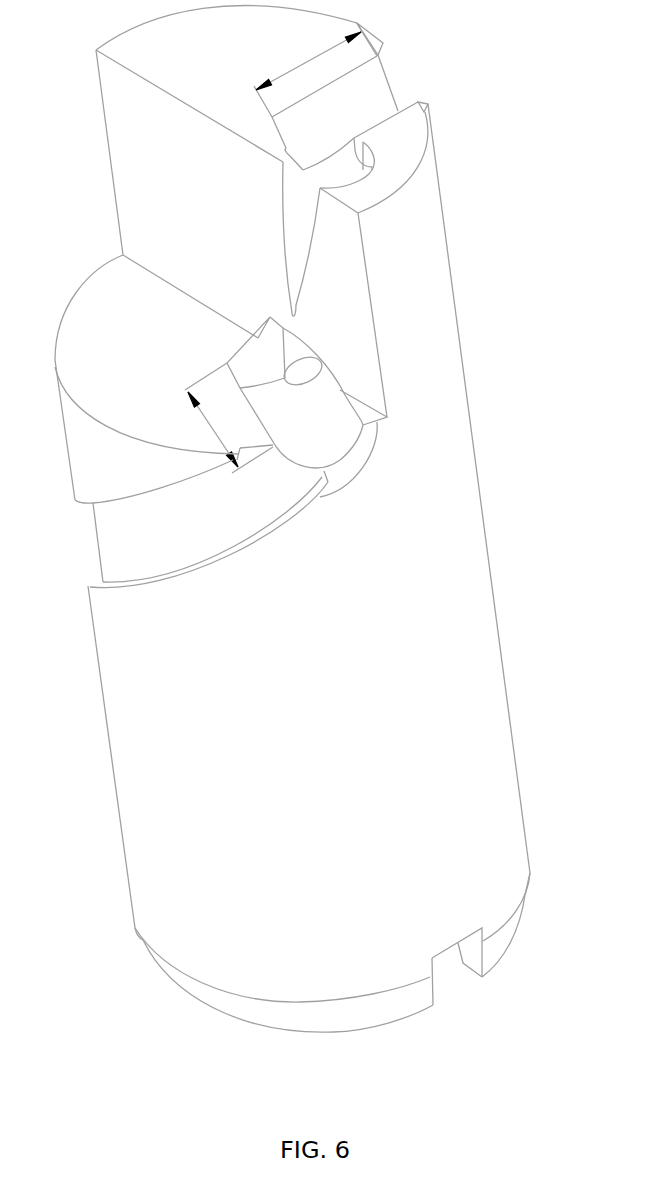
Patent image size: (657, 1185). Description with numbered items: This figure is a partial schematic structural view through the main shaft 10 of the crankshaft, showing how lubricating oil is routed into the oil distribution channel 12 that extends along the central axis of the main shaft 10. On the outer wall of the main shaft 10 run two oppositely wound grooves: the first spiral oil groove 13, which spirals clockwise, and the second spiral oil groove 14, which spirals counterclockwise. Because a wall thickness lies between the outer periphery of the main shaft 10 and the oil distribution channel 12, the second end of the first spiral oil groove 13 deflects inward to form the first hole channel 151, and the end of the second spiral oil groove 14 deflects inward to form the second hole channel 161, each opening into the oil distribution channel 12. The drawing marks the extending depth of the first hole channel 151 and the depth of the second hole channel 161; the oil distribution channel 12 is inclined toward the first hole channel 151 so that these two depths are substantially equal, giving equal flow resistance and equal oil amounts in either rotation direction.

The main shaft 10 is at (440, 513).
The oil distribution channel 12 is at (310, 238).
The first spiral oil groove 13 is at (400, 46).
The second spiral oil groove 14 is at (120, 541).
The first hole channel 151 is at (366, 99).
The second hole channel 161 is at (331, 401).